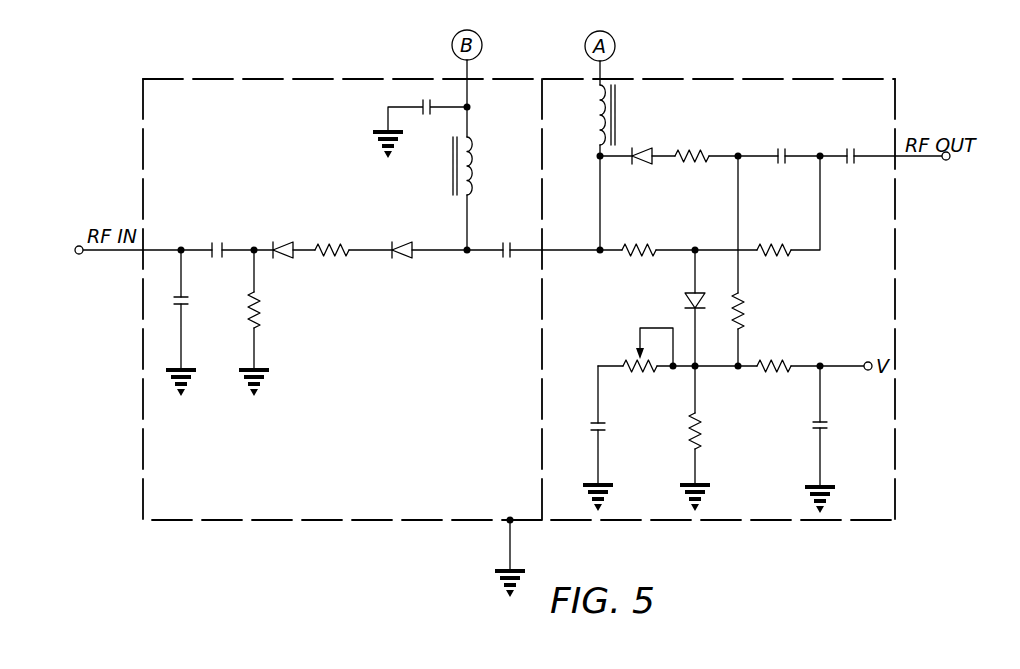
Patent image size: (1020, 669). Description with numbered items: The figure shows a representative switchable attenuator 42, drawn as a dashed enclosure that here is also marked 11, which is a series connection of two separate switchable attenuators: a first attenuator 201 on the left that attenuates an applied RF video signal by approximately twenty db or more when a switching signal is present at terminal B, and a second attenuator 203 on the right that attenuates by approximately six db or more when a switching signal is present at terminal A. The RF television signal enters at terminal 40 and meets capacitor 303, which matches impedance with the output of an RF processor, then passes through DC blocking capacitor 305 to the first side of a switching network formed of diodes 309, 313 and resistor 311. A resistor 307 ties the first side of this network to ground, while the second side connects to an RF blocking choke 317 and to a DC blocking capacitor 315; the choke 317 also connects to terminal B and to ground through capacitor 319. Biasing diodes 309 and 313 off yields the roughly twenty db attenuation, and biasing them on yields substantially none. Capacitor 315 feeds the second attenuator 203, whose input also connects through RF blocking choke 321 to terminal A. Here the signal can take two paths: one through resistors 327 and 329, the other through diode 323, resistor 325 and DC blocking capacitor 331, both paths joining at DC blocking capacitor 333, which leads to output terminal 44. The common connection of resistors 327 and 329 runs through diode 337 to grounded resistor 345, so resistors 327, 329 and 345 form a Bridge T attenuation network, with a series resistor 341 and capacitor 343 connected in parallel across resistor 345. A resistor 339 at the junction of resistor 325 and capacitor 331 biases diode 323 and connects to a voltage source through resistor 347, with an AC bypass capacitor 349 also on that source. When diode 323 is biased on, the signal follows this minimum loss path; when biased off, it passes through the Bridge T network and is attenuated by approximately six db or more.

The amplifier circuit 11 is at (888, 318).
The input terminal 40 is at (79, 255).
The switchable attenuator 42 is at (810, 79).
The output terminal 44 is at (946, 161).
The first switchable attenuator 201 is at (380, 512).
The second switchable attenuator 203 is at (760, 510).
The capacitor 303 is at (190, 302).
The DC blocking capacitor 305 is at (214, 241).
The resistor 307 is at (262, 310).
The diode 309 is at (283, 240).
The resistor 311 is at (335, 241).
The diode 313 is at (405, 241).
The DC blocking capacitor 315 is at (506, 241).
The RF blocking choke 317 is at (473, 166).
The capacitor 319 is at (427, 118).
The RF blocking choke 321 is at (597, 115).
The diode 323 is at (643, 146).
The resistor 325 is at (693, 146).
The resistor 327 is at (638, 241).
The resistor 329 is at (776, 241).
The DC blocking capacitor 331 is at (780, 146).
The DC blocking capacitor 333 is at (850, 146).
The diode 337 is at (684, 301).
The resistor 339 is at (746, 318).
The resistor 341 is at (641, 378).
The capacitor 343 is at (607, 430).
The resistor 345 is at (705, 432).
The resistor 347 is at (781, 359).
The AC bypass capacitor 349 is at (829, 428).